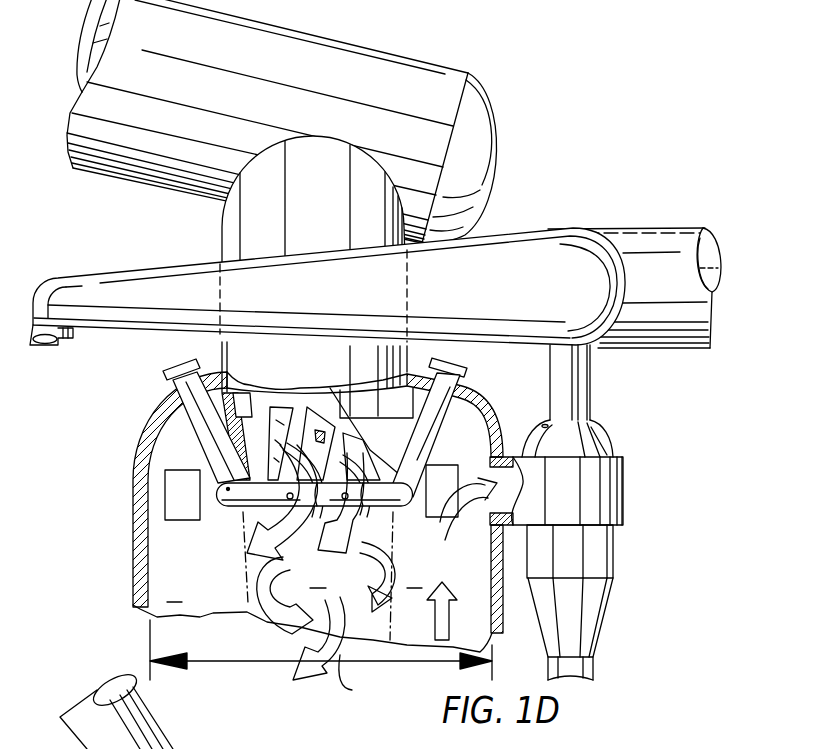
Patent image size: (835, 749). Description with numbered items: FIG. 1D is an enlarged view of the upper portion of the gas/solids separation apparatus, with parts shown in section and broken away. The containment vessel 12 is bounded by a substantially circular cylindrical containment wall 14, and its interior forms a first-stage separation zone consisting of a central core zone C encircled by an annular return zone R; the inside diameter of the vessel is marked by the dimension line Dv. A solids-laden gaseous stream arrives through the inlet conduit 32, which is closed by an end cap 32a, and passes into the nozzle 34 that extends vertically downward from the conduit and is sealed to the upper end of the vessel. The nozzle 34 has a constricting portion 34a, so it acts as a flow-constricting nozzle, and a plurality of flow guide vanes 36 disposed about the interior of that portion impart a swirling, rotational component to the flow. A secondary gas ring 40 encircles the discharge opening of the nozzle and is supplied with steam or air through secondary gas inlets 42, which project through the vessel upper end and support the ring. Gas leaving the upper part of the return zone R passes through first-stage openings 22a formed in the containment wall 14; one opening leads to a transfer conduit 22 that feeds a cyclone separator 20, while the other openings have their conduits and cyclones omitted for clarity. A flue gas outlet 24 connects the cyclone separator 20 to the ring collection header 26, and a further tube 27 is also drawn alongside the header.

The containment vessel 12 is at (133, 577).
The containment wall 14 is at (147, 520).
The cyclone separator 20 is at (582, 549).
The transfer conduit 22 is at (597, 493).
The first-stage opening 22a is at (170, 505).
The flue gas outlet 24 is at (68, 340).
The ring collection header 26 is at (165, 287).
The tube extension 27 is at (647, 328).
The inlet conduit 32 is at (318, 52).
The end cap 32a is at (450, 140).
The nozzle 34 is at (262, 225).
The constricting portion 34a is at (402, 416).
The flow guide vanes 36 is at (280, 412).
The secondary gas ring 40 is at (245, 513).
The secondary gas inlets 42 is at (145, 465).